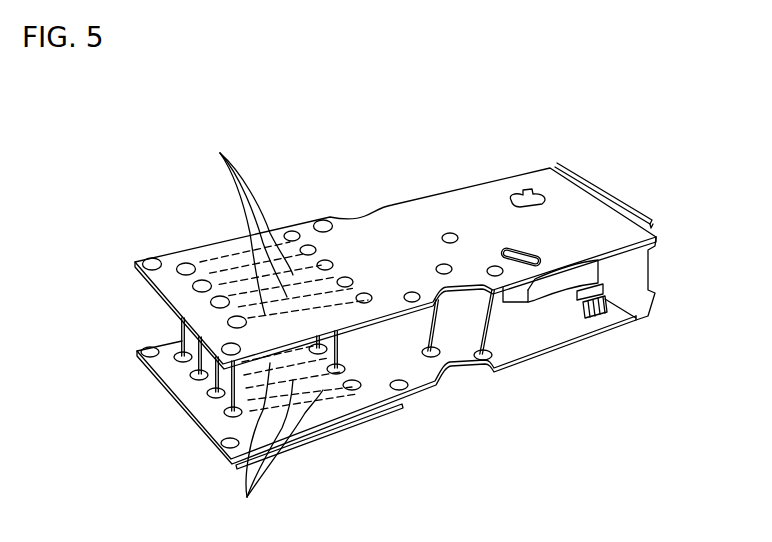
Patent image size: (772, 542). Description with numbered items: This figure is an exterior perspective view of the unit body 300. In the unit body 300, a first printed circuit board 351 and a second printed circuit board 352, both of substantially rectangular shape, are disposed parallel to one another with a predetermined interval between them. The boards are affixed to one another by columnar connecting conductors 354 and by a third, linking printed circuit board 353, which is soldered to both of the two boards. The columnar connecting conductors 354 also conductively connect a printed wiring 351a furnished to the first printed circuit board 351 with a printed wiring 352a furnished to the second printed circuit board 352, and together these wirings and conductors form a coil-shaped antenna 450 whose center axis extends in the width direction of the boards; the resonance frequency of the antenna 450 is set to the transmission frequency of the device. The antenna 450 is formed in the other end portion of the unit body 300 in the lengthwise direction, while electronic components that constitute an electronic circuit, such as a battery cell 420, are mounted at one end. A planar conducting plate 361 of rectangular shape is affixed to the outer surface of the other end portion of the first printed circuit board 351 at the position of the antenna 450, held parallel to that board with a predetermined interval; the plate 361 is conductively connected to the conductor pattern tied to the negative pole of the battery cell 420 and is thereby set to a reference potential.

The unit body 300 is at (467, 168).
The antenna 450 is at (163, 242).
The second printed circuit board 352 is at (453, 198).
The printed wiring 352a is at (239, 223).
The first printed circuit board 351 is at (433, 384).
The printed wiring 351a is at (272, 445).
The third printed circuit board 353 is at (622, 268).
The columnar connecting conductors 354 is at (205, 398).
The planar conducting plate 361 is at (323, 438).
The battery cell 420 is at (560, 283).